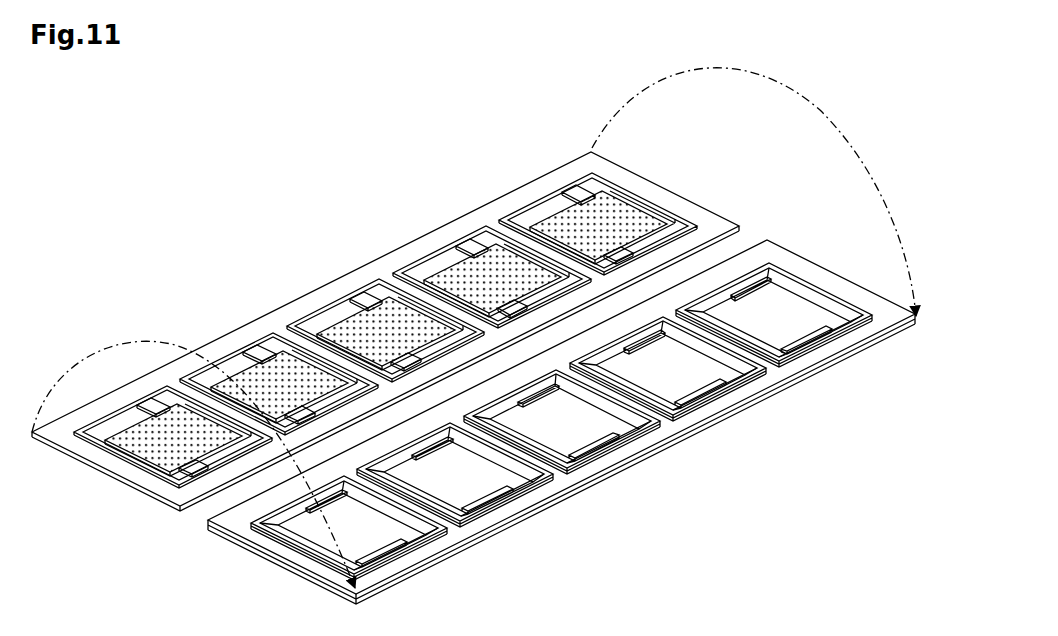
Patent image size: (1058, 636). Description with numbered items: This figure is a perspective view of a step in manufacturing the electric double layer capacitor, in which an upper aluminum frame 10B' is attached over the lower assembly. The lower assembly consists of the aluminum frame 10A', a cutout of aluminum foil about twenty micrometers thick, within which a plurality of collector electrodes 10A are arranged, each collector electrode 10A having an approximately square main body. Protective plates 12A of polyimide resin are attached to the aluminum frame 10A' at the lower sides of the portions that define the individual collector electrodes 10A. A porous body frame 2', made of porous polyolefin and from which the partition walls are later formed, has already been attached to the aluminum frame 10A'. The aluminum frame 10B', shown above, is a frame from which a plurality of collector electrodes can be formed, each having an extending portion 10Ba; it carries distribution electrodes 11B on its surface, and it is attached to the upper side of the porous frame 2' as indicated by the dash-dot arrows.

The aluminum frame 10B' is at (403, 317).
The aluminum frame 10A' is at (561, 422).
The collector electrode 10A is at (394, 323).
The extending portion 10Ba is at (583, 192).
The protective plate 12A is at (700, 222).
The distribution electrode 11B is at (257, 362).
The porous body frame 2' is at (561, 459).